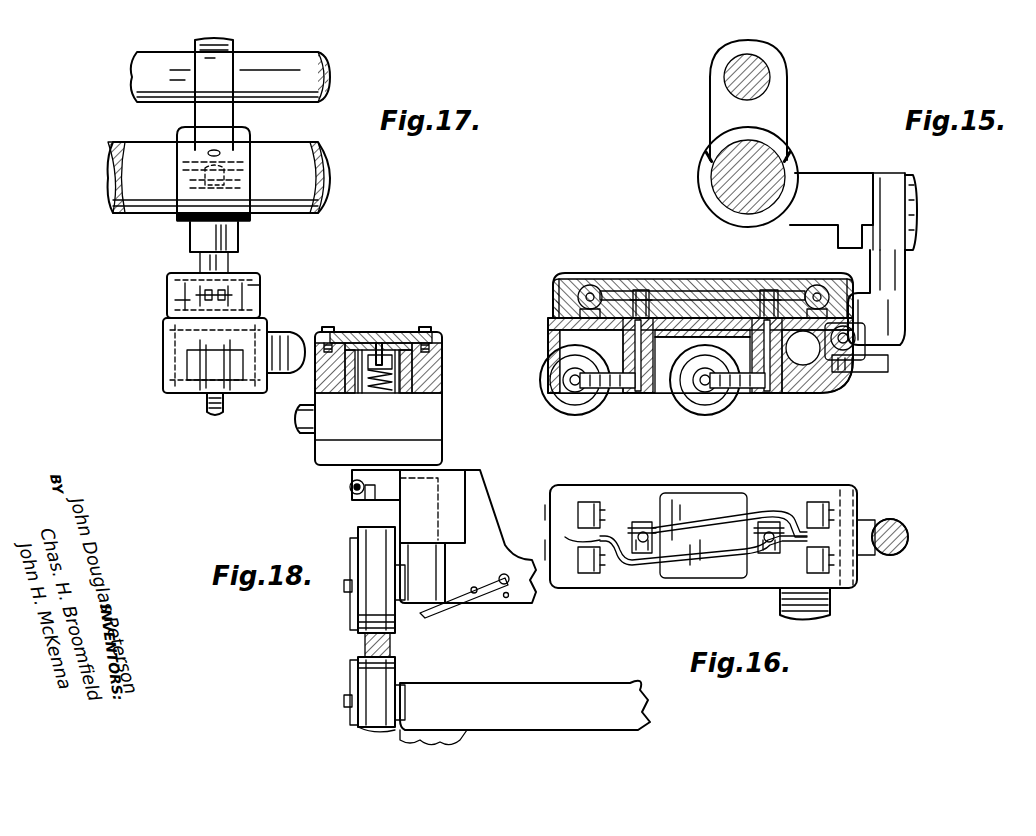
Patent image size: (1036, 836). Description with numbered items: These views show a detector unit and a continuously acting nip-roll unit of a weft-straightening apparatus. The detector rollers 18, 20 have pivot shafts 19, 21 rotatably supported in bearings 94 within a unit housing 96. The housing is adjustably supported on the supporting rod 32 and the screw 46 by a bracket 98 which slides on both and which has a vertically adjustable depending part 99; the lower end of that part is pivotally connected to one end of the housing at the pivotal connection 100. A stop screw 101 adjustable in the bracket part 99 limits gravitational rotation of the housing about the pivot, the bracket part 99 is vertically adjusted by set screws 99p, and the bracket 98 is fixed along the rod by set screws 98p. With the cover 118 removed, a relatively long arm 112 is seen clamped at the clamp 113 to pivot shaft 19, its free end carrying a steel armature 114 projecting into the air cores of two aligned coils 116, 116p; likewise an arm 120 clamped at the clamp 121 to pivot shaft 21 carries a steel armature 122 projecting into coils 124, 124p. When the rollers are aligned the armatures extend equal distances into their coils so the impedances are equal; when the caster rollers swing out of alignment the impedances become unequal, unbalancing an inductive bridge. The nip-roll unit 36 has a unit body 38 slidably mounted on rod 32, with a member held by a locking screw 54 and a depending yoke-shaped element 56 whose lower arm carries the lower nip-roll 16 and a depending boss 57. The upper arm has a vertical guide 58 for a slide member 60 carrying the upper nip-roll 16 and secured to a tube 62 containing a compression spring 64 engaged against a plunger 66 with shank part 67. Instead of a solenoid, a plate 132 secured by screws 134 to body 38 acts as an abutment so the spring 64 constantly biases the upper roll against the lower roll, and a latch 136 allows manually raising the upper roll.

In FIG. 18, the nip-roll 16 is at (372, 670).
In FIG. 17, the detector roller 18 is at (210, 398).
In FIG. 15, the detector roller 18 is at (565, 405).
In FIG. 15, the pivot shaft 19 is at (640, 393).
In FIG. 16, the pivot shaft 19 is at (645, 533).
In FIG. 15, the detector roller 20 is at (695, 412).
In FIG. 15, the pivot shaft 21 is at (765, 393).
In FIG. 16, the pivot shaft 21 is at (772, 533).
In FIG. 17, the supporting rod 32 is at (305, 160).
In FIG. 15, the supporting rod 32 is at (725, 180).
In FIG. 18, the nip-roll unit 36 is at (343, 492).
In FIG. 18, the unit body 38 is at (432, 417).
In FIG. 17, the screw 46 is at (292, 53).
In FIG. 15, the screw 46 is at (770, 62).
In FIG. 18, the locking screw 54 is at (300, 426).
In FIG. 18, the yoke-shaped element 56 is at (510, 690).
In FIG. 18, the depending boss 57 is at (410, 735).
In FIG. 18, the vertical guide 58 is at (430, 505).
In FIG. 18, the slide member 60 is at (430, 610).
In FIG. 18, the tube 62 is at (440, 360).
In FIG. 18, the compression spring 64 is at (432, 382).
In FIG. 18, the plunger 66 is at (395, 335).
In FIG. 18, the shank part 67 is at (378, 342).
In FIG. 15, the bearings 94 is at (615, 395).
In FIG. 17, the unit housing 96 is at (165, 347).
In FIG. 15, the unit housing 96 is at (546, 334).
In FIG. 16, the unit housing 96 is at (554, 484).
In FIG. 17, the bracket 98 is at (190, 172).
In FIG. 15, the bracket 98 is at (840, 172).
In FIG. 17, the set screws 98p is at (208, 152).
In FIG. 15, the set screws 98p is at (709, 158).
In FIG. 17, the depending part 99 is at (238, 265).
In FIG. 15, the depending part 99 is at (900, 273).
In FIG. 16, the depending part 99 is at (908, 535).
In FIG. 15, the set screws 99p is at (915, 192).
In FIG. 15, the pivotal connection 100 is at (855, 340).
In FIG. 15, the stop screw 101 is at (852, 370).
In FIG. 16, the arm 112 is at (730, 512).
In FIG. 15, the clamp 113 is at (642, 290).
In FIG. 16, the clamp 113 is at (640, 530).
In FIG. 16, the steel armature 114 is at (835, 537).
In FIG. 15, the coil 116 is at (820, 290).
In FIG. 16, the coil 116 is at (820, 562).
In FIG. 16, the coil 116p is at (817, 510).
In FIG. 17, the cover 118 is at (170, 292).
In FIG. 15, the cover 118 is at (702, 276).
In FIG. 15, the arm 120 is at (615, 292).
In FIG. 16, the arm 120 is at (650, 570).
In FIG. 15, the clamp 121 is at (769, 290).
In FIG. 16, the clamp 121 is at (768, 553).
In FIG. 16, the steel armature 122 is at (580, 538).
In FIG. 17, the coil 124 is at (258, 292).
In FIG. 15, the coil 124 is at (588, 292).
In FIG. 16, the coil 124 is at (587, 560).
In FIG. 17, the coil 124p is at (185, 303).
In FIG. 16, the coil 124p is at (588, 510).
In FIG. 18, the plate 132 is at (352, 332).
In FIG. 18, the screws 134 is at (430, 331).
In FIG. 18, the latch 136 is at (480, 596).